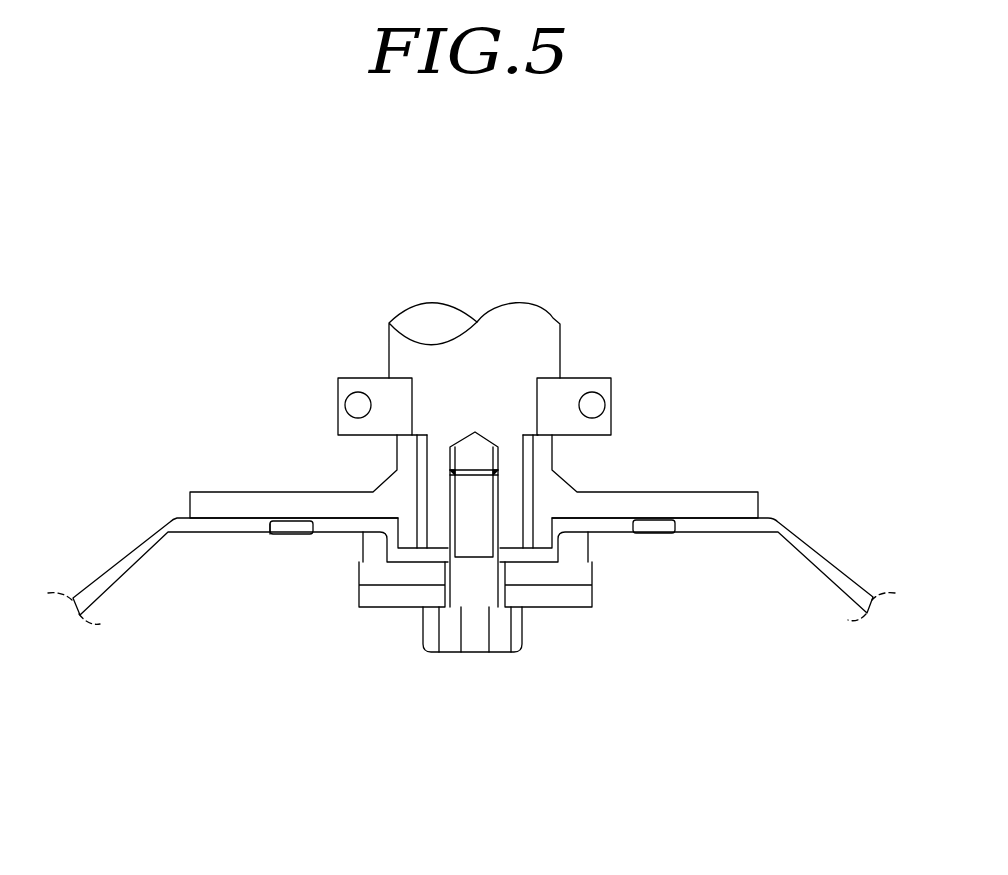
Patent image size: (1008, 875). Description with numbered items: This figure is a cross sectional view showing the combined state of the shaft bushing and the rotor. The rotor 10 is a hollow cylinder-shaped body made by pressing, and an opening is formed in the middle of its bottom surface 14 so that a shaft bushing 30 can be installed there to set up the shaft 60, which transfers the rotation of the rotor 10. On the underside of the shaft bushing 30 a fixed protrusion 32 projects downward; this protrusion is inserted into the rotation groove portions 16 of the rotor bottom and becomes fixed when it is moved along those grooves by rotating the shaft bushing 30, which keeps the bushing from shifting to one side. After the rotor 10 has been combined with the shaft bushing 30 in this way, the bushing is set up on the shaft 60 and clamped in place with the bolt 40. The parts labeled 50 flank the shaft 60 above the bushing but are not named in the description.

The rotor 10 is at (807, 553).
The bottom surface 14 is at (245, 518).
The rotation groove portions 16 is at (297, 534).
The shaft bushing 30 is at (218, 503).
The fixed protrusion 32 is at (278, 534).
The bolt 40 is at (473, 634).
The terminal block 50 is at (597, 379).
The shaft 60 is at (520, 347).